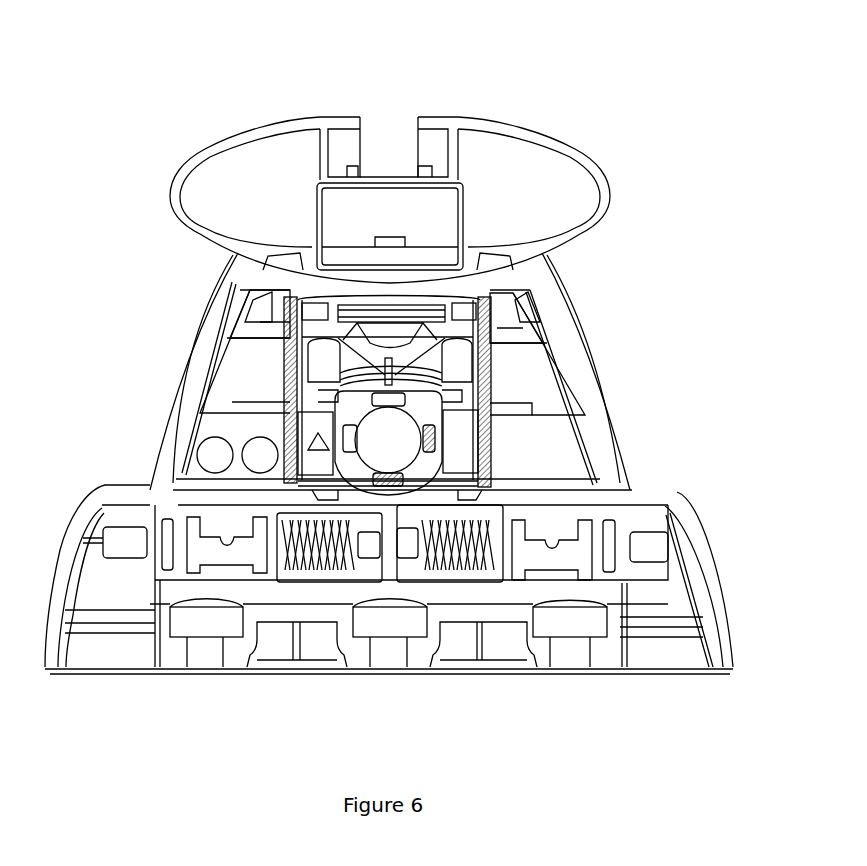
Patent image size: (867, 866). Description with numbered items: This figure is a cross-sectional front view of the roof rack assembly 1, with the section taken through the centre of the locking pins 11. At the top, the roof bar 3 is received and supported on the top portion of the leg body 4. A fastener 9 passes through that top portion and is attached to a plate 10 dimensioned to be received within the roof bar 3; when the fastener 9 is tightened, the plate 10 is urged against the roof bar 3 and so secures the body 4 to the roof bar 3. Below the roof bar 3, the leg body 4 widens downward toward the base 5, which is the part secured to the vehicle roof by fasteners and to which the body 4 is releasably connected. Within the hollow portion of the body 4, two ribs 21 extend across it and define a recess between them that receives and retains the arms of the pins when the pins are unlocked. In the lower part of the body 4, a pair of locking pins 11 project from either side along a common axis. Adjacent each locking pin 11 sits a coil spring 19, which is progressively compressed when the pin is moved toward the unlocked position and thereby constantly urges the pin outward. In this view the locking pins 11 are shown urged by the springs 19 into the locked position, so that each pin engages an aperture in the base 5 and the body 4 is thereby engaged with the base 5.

The roof rack assembly 1 is at (137, 126).
The roof bar 3 is at (482, 122).
The leg body 4 is at (565, 331).
The base 5 is at (702, 535).
The fastener 9 is at (386, 238).
The plate 10 is at (337, 253).
The locking pins 11 is at (130, 570).
The coil spring 19 is at (450, 570).
The ribs 21 is at (285, 375).